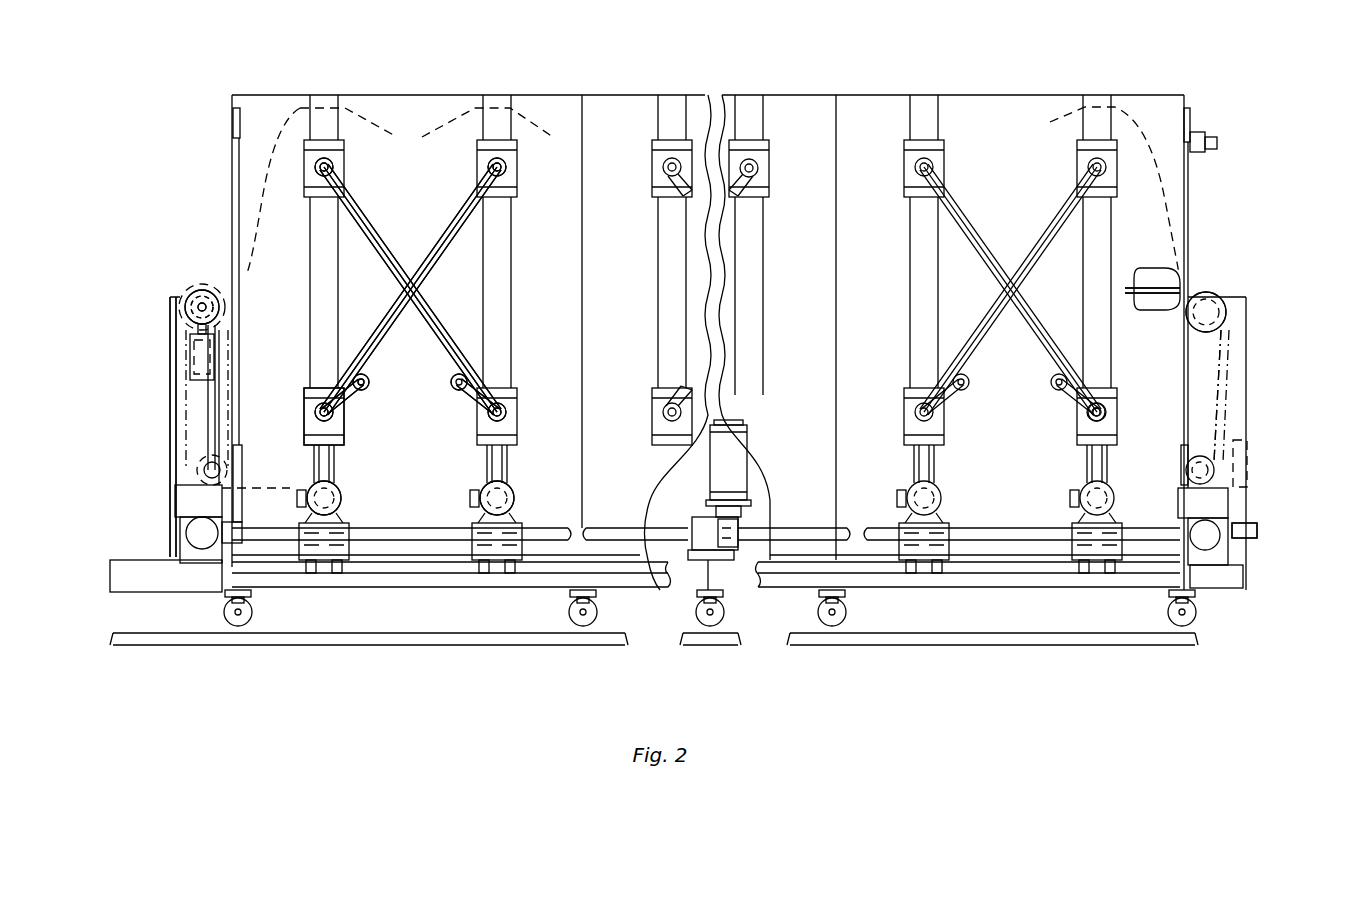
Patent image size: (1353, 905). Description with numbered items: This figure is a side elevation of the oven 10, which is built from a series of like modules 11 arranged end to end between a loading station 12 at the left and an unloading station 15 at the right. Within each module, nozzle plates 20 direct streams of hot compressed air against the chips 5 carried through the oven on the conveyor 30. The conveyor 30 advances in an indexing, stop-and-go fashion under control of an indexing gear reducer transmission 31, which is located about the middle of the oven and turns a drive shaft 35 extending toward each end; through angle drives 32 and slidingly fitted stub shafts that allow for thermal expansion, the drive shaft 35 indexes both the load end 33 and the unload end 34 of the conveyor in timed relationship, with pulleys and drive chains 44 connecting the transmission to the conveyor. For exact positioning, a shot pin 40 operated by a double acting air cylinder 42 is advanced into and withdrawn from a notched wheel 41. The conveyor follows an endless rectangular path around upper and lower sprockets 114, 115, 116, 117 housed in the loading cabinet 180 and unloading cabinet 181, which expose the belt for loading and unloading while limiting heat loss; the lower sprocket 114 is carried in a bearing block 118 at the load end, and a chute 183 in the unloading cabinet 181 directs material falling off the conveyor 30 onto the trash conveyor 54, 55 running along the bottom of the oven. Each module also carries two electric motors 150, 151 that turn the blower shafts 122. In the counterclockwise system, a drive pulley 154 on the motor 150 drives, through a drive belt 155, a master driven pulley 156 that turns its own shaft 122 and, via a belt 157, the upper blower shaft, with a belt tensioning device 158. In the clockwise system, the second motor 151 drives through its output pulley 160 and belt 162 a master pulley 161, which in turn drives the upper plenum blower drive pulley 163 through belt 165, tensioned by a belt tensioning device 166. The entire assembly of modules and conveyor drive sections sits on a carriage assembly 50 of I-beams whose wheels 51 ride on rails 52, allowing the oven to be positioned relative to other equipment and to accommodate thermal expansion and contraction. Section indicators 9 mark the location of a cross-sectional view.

The oven 10 is at (376, 70).
The module 11 is at (415, 92).
The loading station 12 is at (168, 297).
The unloading station 15 is at (1254, 303).
The nozzle plate 20 is at (1165, 290).
The conveyor 30 is at (225, 285).
The indexing gear reducer transmission 31 is at (703, 522).
The angle drive 32 is at (197, 552).
The load end 33 is at (225, 310).
The unload end 34 is at (1230, 312).
The drive shaft 35 is at (386, 527).
The shot pin 40 is at (183, 330).
The notched wheel 41 is at (200, 327).
The double acting air cylinder 42 is at (190, 368).
The pulleys and drive chains 44 is at (177, 437).
The carriage assembly 50 is at (534, 597).
The wheels 51 is at (254, 612).
The rails 52 is at (412, 632).
The trash conveyor 54 is at (1250, 547).
The trash conveyor 55 is at (1244, 530).
The sprocket 114 is at (200, 470).
The sprocket 115 is at (187, 303).
The sprocket 116 is at (1217, 292).
The sprocket 117 is at (1214, 468).
The bearing block 118 is at (200, 485).
The blower shaft 122 is at (507, 166).
The electric motor 150 is at (340, 488).
The electric motor 151 is at (1085, 495).
The drive pulley 154 is at (335, 496).
The drive belt 155 is at (335, 440).
The master driven pulley 156 is at (340, 404).
The belt 157 is at (442, 232).
The belt tensioning device 158 is at (373, 377).
The output pulley 160 is at (512, 503).
The master pulley 161 is at (508, 403).
The belt 162 is at (332, 166).
The upper plenum blower drive pulley 163 is at (316, 169).
The belt 165 is at (370, 198).
The belt tensioning device 166 is at (458, 392).
The loading cabinet 180 is at (170, 400).
The unloading cabinet 181 is at (1237, 425).
The chute 183 is at (1250, 450).
The chips 5 is at (835, 78).
The section line 9- 9 is at (103, 285).